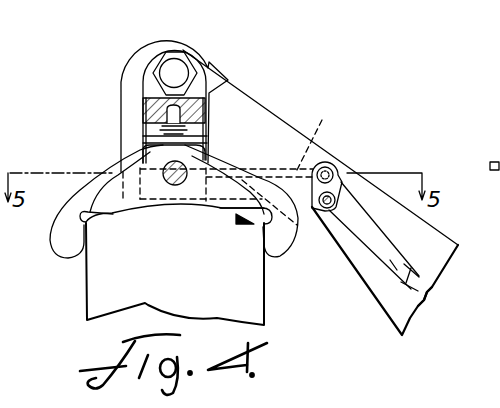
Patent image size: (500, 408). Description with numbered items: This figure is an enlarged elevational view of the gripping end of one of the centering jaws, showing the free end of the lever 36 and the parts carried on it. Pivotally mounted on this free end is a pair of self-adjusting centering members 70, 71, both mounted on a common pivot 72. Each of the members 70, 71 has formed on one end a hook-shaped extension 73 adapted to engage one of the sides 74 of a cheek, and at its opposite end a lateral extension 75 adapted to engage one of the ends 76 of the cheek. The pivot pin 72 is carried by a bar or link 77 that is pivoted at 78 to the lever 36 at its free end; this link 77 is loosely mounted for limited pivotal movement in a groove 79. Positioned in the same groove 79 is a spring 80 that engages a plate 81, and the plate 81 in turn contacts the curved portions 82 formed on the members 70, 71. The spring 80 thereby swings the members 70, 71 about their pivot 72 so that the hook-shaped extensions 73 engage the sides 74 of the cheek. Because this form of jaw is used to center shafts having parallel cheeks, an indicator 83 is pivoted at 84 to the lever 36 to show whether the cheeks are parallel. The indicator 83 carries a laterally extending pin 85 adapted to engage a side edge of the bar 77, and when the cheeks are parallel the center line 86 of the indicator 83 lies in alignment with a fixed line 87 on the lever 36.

The lever 36 is at (447, 238).
The self-adjusting centering member 70 is at (236, 203).
The self-adjusting centering member 71 is at (113, 172).
The pivot 72 is at (180, 167).
The hook-shaped extension 73 is at (67, 242).
The side of cheek 74 is at (87, 305).
The lateral extension 75 is at (100, 212).
The end of cheek 76 is at (210, 215).
The bar or link 77 is at (152, 60).
The pivot 78 is at (176, 73).
The groove 79 is at (229, 79).
The spring 80 is at (162, 130).
The plate 81 is at (152, 138).
The curved portion 82 is at (173, 147).
The indicator 83 is at (361, 228).
The pivot 84 is at (340, 198).
The laterally extending pin 85 is at (231, 166).
The center line 86 is at (410, 270).
The fixed line 87 is at (433, 284).